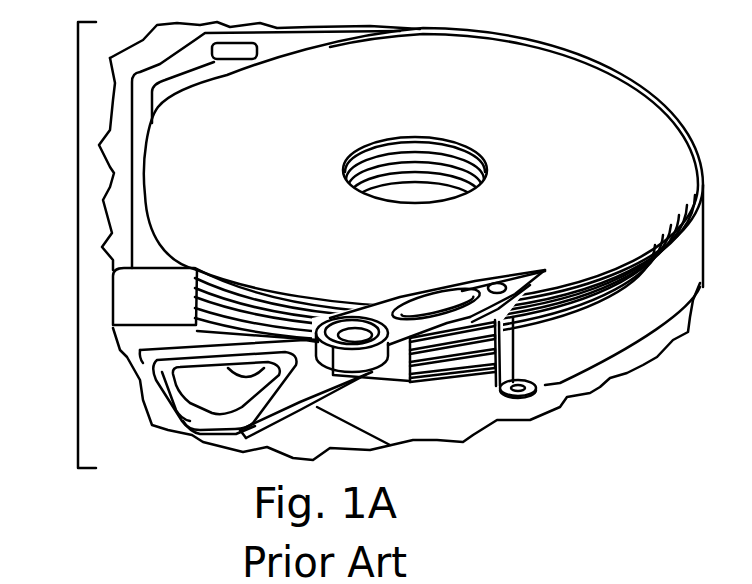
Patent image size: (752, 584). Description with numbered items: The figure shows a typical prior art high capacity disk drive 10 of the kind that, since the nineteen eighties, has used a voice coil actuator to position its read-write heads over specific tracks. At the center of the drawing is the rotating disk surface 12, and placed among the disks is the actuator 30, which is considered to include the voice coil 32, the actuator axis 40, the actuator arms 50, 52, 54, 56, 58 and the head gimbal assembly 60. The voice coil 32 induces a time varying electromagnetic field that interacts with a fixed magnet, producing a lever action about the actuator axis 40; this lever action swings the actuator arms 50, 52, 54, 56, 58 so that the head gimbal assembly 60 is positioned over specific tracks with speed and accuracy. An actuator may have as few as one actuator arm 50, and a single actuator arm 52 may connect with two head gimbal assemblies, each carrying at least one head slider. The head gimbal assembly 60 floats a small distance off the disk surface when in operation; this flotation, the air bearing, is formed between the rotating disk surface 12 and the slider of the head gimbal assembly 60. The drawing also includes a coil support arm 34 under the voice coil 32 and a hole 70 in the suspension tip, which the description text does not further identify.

The disk drive 10 is at (78, 245).
The rotating disk surface 12 is at (617, 100).
The actuator 30 is at (397, 383).
The voice coil 32 is at (213, 420).
The coil support arm 34 is at (323, 398).
The actuator axis 40 is at (350, 325).
The actuator arm 50 is at (458, 284).
The actuator arm 52 is at (433, 355).
The actuator arm 54 is at (423, 378).
The actuator arm 56 is at (437, 380).
The actuator arm 58 is at (440, 350).
The head gimbal assembly 60 is at (537, 273).
The mounting hole 70 is at (493, 281).